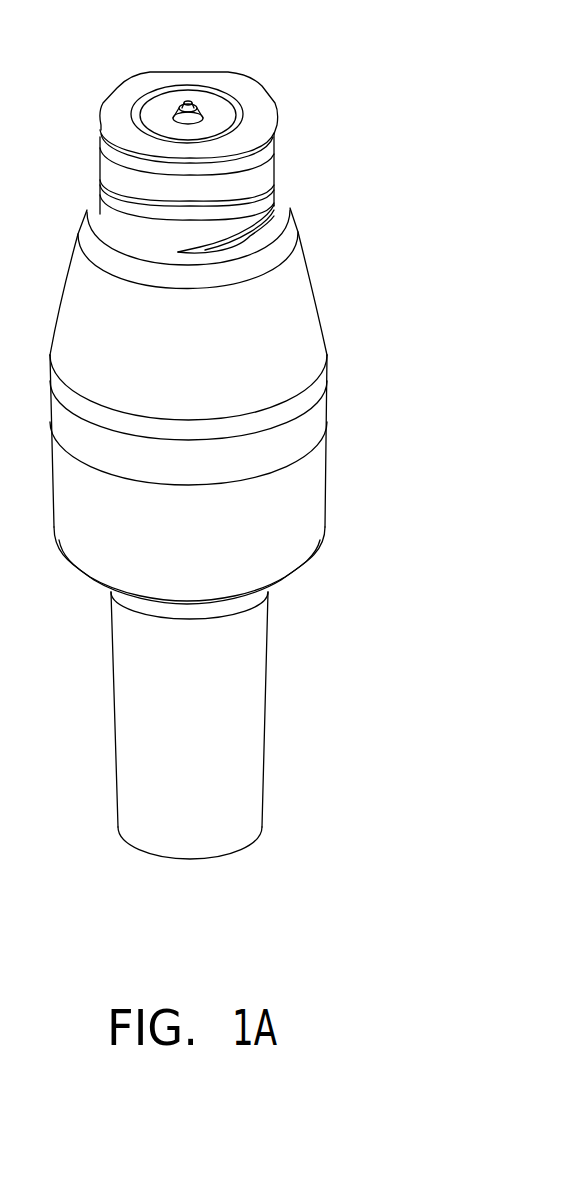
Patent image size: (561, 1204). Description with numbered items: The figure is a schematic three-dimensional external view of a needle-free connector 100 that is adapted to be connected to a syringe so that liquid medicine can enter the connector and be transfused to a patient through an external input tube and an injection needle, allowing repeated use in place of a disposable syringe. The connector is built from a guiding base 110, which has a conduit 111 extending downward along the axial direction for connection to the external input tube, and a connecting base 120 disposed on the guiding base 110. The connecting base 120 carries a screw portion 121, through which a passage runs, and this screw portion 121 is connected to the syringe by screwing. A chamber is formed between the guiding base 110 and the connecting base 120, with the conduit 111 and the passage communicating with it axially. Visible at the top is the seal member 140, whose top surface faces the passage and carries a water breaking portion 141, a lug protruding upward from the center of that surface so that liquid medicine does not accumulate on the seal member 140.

The needle-free connector 100 is at (244, 470).
The guiding base 110 is at (220, 607).
The conduit 111 is at (245, 690).
The connecting base 120 is at (213, 244).
The screw portion 121 is at (121, 178).
The seal member 140 is at (215, 92).
The water breaking portion 141 is at (187, 101).